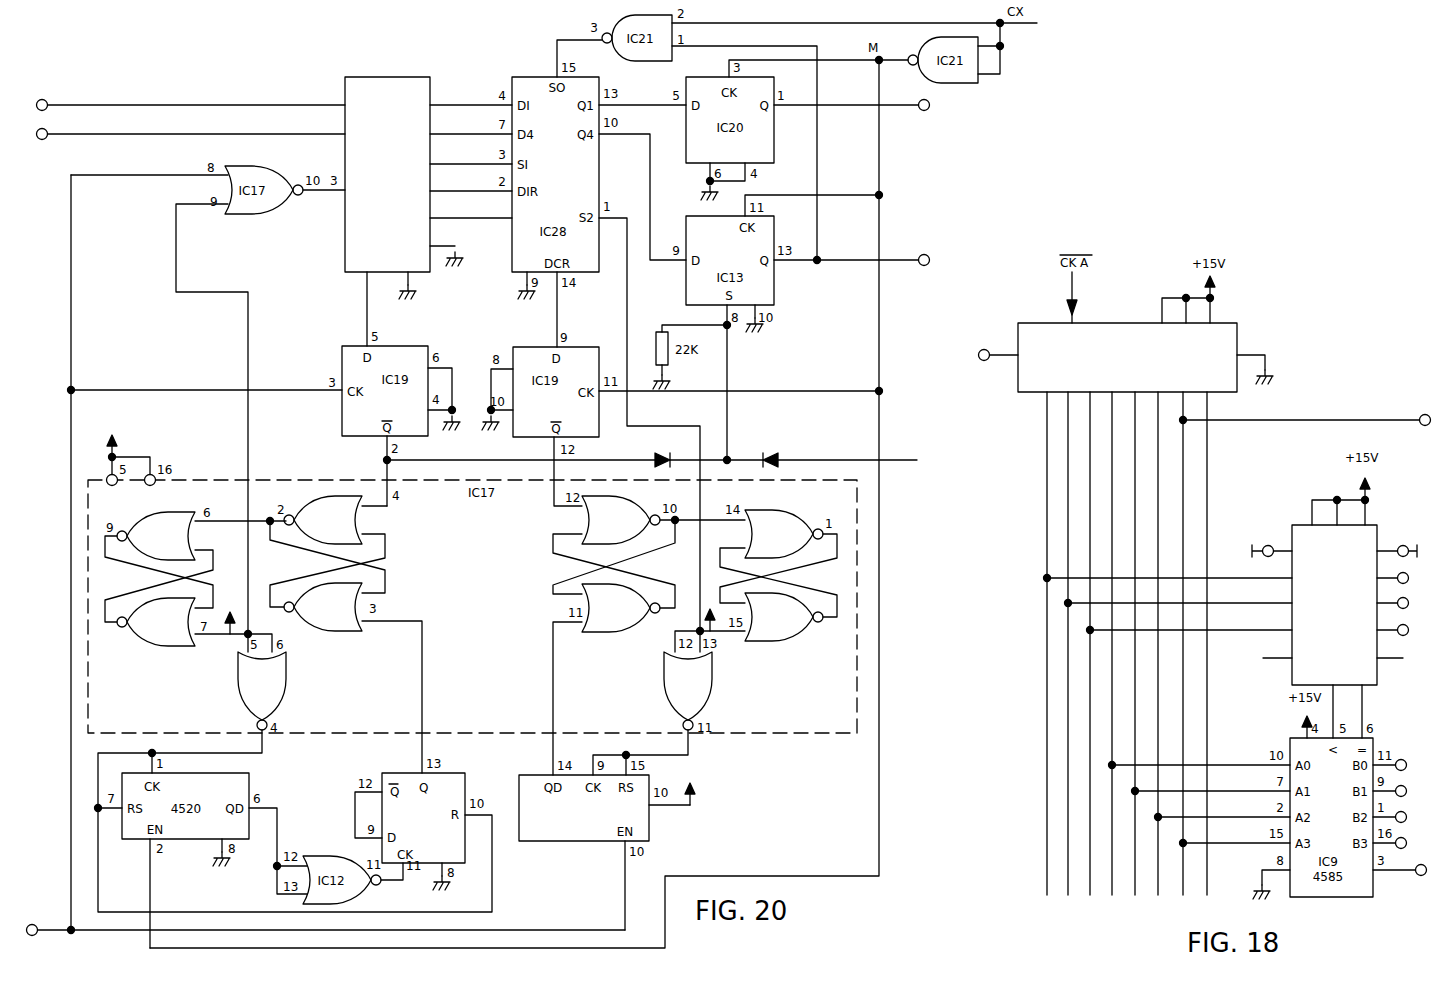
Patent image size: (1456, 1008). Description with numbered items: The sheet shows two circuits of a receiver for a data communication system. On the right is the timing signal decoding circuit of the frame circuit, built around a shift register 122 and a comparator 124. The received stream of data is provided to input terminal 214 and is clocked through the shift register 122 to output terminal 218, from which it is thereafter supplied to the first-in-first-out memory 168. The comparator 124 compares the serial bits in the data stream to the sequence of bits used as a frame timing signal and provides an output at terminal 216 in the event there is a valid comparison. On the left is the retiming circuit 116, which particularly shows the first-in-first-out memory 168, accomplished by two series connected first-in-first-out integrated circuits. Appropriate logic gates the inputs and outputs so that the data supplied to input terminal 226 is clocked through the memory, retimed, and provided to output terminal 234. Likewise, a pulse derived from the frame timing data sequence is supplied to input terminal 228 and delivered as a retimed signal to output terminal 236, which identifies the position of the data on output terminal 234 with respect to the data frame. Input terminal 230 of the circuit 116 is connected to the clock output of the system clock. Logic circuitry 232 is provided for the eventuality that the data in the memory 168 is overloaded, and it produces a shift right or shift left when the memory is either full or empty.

In FIG. 20, the input terminal 226 is at (60, 84).
In FIG. 20, the input terminal 228 is at (47, 140).
In FIG. 20, the first-in-first-out memory 168 is at (466, 88).
In FIG. 20, the output terminal 234 is at (919, 112).
In FIG. 20, the output terminal 236 is at (919, 267).
In FIG. 20, the circuit 116 is at (62, 412).
In FIG. 20, the logic circuitry 232 is at (789, 746).
In FIG. 20, the input terminal 230 is at (37, 936).
In FIG. 18, the shift register 122 is at (1234, 322).
In FIG. 18, the input terminal 214 is at (986, 361).
In FIG. 18, the output terminal 218 is at (1421, 413).
In FIG. 18, the comparator 124 is at (1265, 512).
In FIG. 18, the terminal 216 is at (1417, 877).